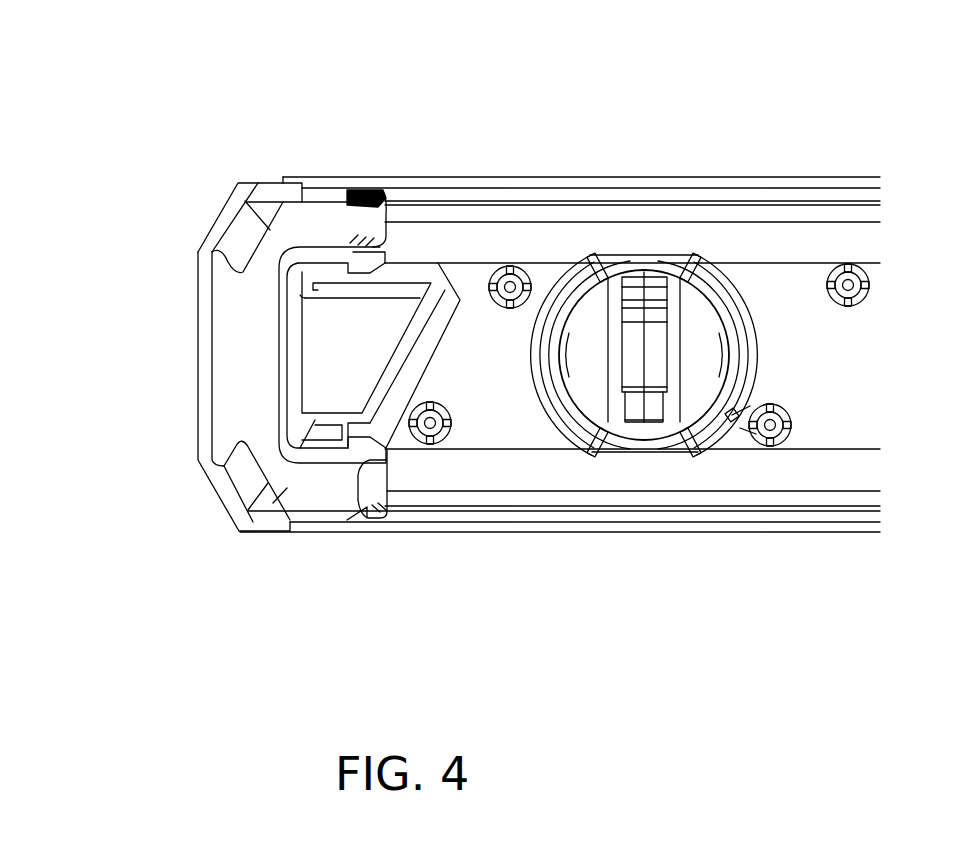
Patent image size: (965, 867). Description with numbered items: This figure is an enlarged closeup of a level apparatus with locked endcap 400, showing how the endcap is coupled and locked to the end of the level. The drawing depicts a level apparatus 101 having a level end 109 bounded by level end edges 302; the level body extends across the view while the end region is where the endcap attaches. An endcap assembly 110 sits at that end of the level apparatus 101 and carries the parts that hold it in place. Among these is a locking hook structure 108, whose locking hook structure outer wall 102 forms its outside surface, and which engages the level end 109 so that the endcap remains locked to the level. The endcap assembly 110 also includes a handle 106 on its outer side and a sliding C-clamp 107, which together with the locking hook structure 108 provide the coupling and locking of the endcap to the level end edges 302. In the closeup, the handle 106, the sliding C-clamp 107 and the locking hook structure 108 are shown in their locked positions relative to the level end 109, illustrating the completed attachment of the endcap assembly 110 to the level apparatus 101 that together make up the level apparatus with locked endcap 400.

The level apparatus with locked endcap 400 is at (805, 72).
The level apparatus 101 is at (567, 177).
The locking hook structure outer wall 102 is at (235, 183).
The level end edges 302 is at (283, 183).
The handle 106 is at (235, 313).
The endcap assembly 110 is at (197, 380).
The sliding C-clamp 107 is at (267, 500).
The locking hook structure 108 is at (367, 512).
The level end 109 is at (392, 415).